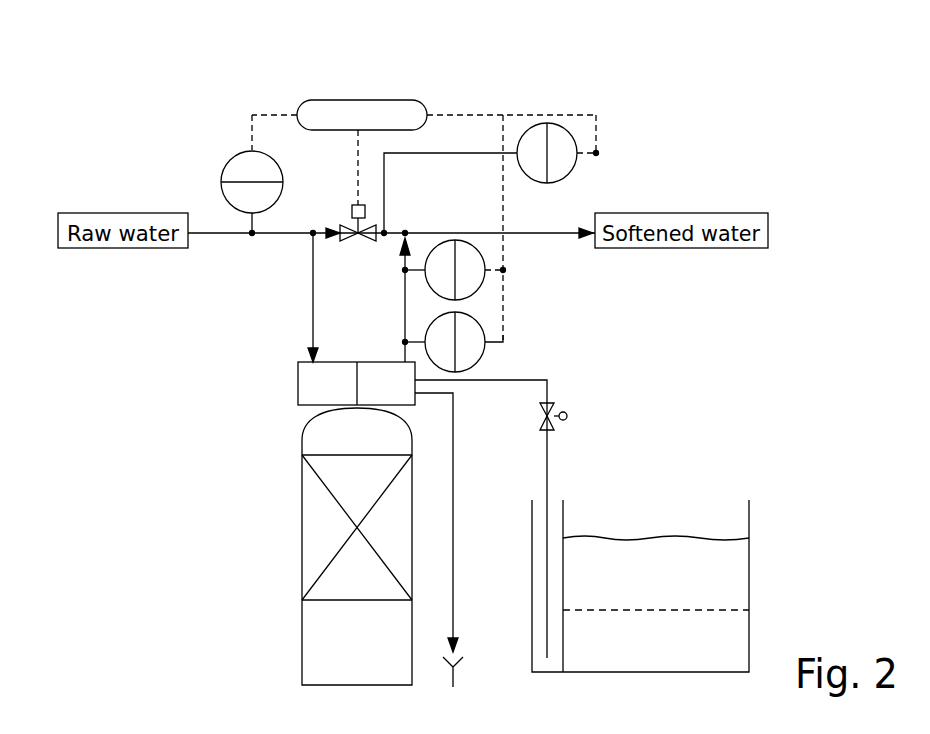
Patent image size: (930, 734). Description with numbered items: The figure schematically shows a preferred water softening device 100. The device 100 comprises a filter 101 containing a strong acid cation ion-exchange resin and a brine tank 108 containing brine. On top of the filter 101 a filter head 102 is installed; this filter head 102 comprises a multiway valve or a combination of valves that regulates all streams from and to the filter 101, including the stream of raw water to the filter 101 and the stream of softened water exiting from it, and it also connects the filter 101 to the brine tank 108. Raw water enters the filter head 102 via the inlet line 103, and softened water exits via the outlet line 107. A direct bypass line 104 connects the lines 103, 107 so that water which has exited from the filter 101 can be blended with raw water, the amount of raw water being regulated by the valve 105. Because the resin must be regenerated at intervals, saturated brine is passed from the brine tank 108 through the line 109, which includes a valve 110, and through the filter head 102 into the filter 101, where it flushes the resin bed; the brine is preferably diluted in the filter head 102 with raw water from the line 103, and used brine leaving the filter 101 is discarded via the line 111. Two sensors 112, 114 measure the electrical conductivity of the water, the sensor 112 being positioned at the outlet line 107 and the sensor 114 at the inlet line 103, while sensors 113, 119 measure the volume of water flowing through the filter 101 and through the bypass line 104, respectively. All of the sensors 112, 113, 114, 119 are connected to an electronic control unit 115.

The water softening device 100 is at (90, 643).
The filter 101 is at (312, 503).
The filter head 102 is at (312, 388).
The line 103 is at (313, 270).
The bypass line 104 is at (388, 230).
The valve 105 is at (338, 222).
The line 107 is at (405, 287).
The brine tank 108 is at (718, 580).
The line 109 is at (550, 386).
The valve 110 is at (585, 412).
The line 111 is at (458, 470).
The sensor 112 is at (475, 332).
The sensor 113 is at (470, 283).
The sensor 114 is at (237, 172).
The electronic control unit 115 is at (390, 118).
The sensor 119 is at (557, 180).